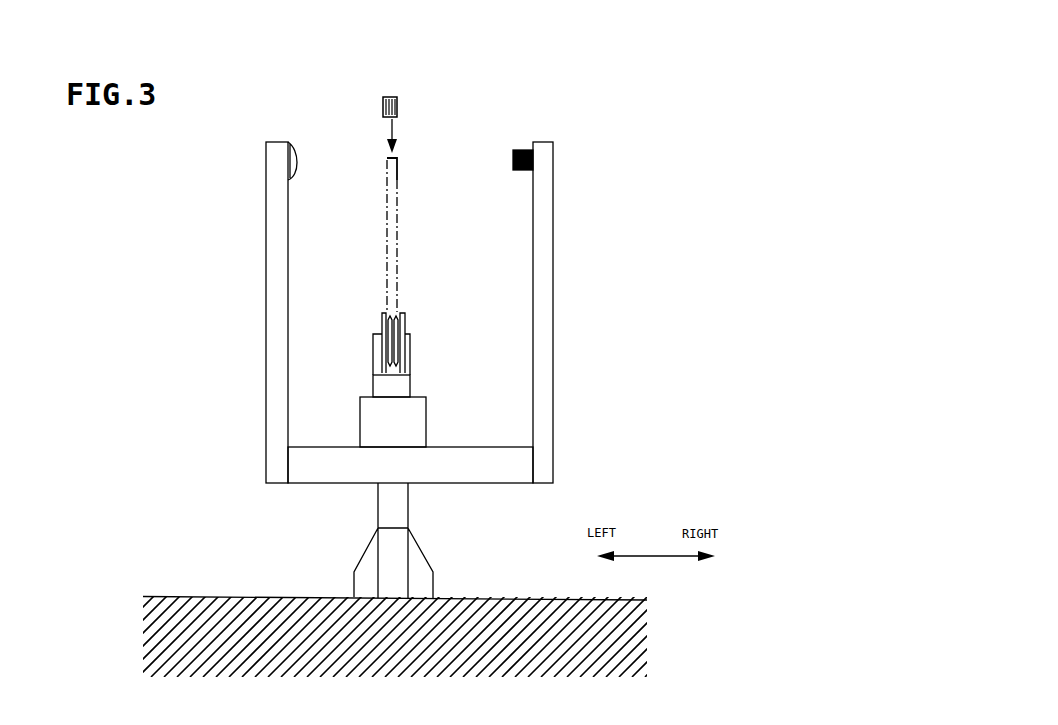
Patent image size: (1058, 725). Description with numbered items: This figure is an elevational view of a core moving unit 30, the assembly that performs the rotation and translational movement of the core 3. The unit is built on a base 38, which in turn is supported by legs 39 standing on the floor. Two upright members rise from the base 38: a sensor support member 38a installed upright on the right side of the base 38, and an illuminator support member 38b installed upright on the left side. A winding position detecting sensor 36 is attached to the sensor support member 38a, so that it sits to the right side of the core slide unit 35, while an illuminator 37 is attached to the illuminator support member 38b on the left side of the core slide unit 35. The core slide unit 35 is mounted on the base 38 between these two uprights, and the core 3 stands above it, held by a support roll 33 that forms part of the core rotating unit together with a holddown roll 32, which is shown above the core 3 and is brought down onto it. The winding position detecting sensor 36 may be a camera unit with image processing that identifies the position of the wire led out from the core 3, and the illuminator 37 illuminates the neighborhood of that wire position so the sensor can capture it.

The core 3 is at (398, 213).
The core moving unit 30 is at (594, 222).
The holddown roll 32 is at (393, 98).
The support roll 33 is at (398, 317).
The core slide unit 35 is at (418, 415).
The winding position detecting sensor 36 is at (524, 150).
The illuminator 37 is at (290, 142).
The base 38 is at (485, 446).
The sensor support member 38a is at (545, 278).
The illuminator support member 38b is at (267, 275).
The legs 39 is at (416, 580).